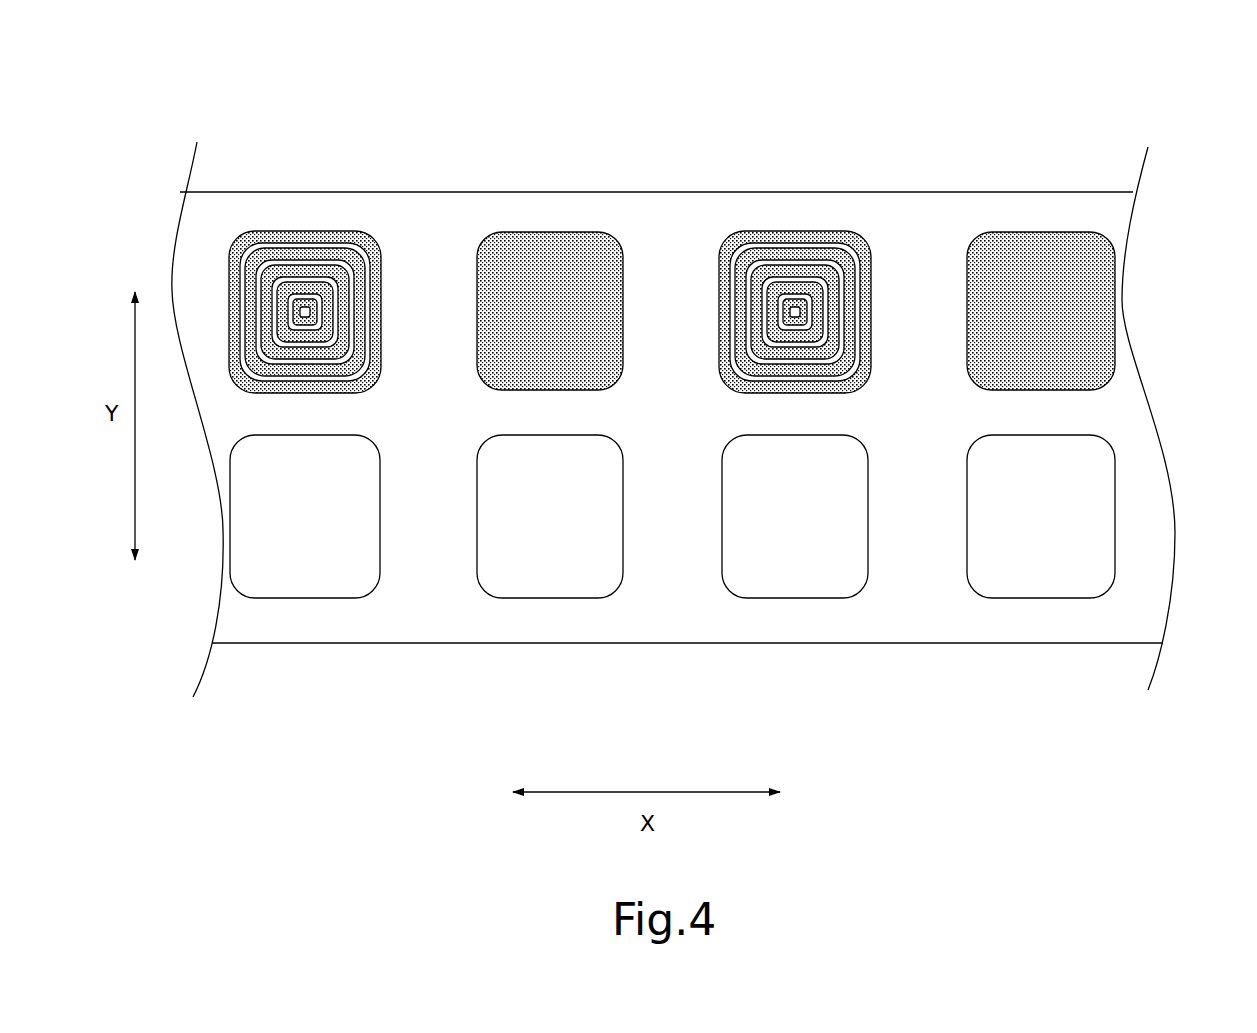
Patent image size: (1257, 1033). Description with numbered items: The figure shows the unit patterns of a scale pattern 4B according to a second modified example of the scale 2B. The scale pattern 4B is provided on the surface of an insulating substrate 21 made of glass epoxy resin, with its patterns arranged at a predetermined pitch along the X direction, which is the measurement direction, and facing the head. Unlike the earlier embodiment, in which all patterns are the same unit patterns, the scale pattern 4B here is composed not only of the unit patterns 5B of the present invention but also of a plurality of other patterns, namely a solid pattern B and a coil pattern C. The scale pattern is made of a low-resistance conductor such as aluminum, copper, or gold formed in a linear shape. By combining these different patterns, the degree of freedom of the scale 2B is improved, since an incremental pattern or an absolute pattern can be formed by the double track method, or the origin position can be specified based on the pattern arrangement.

The scale 2B is at (1143, 122).
The scale pattern 4B is at (1148, 332).
The insulating substrate 21 is at (657, 627).
The unit pattern 5B is at (328, 218).
The solid pattern B is at (550, 227).
The coil pattern C is at (312, 610).